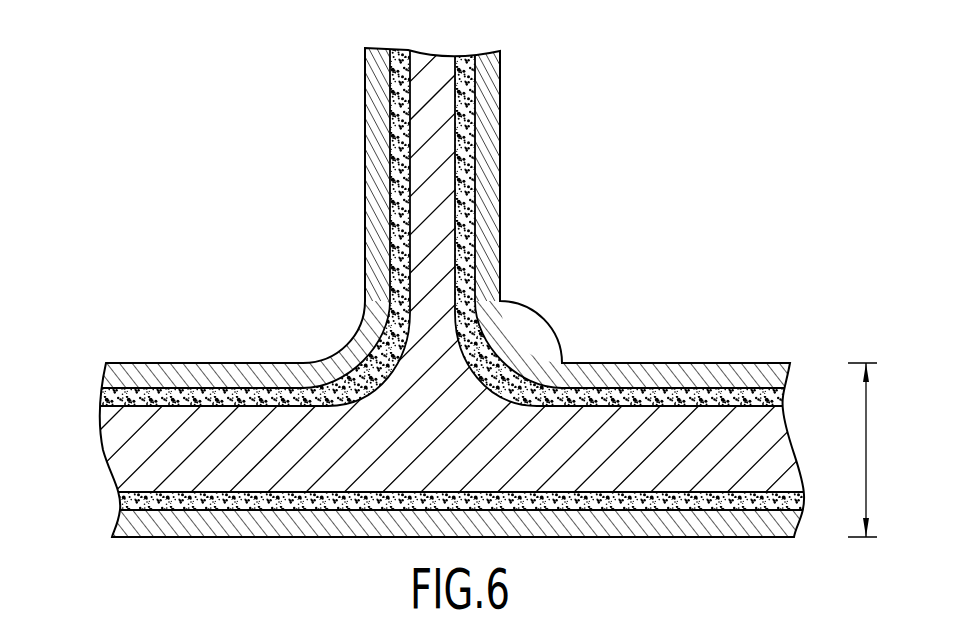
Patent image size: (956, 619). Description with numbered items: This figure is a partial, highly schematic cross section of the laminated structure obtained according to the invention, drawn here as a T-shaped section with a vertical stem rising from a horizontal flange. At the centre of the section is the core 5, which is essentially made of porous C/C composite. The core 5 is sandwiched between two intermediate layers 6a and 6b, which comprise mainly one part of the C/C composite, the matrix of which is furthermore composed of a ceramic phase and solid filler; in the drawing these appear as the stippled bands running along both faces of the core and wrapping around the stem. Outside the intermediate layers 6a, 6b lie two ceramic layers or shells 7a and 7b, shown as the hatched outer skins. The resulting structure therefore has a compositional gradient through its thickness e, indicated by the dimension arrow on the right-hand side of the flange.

The core 5 is at (477, 372).
The intermediate layer 6a is at (100, 394).
The intermediate layer 6b is at (118, 500).
The ceramic layer or shell 7a is at (783, 369).
The ceramic layer or shell 7b is at (781, 517).
The thickness e is at (869, 450).